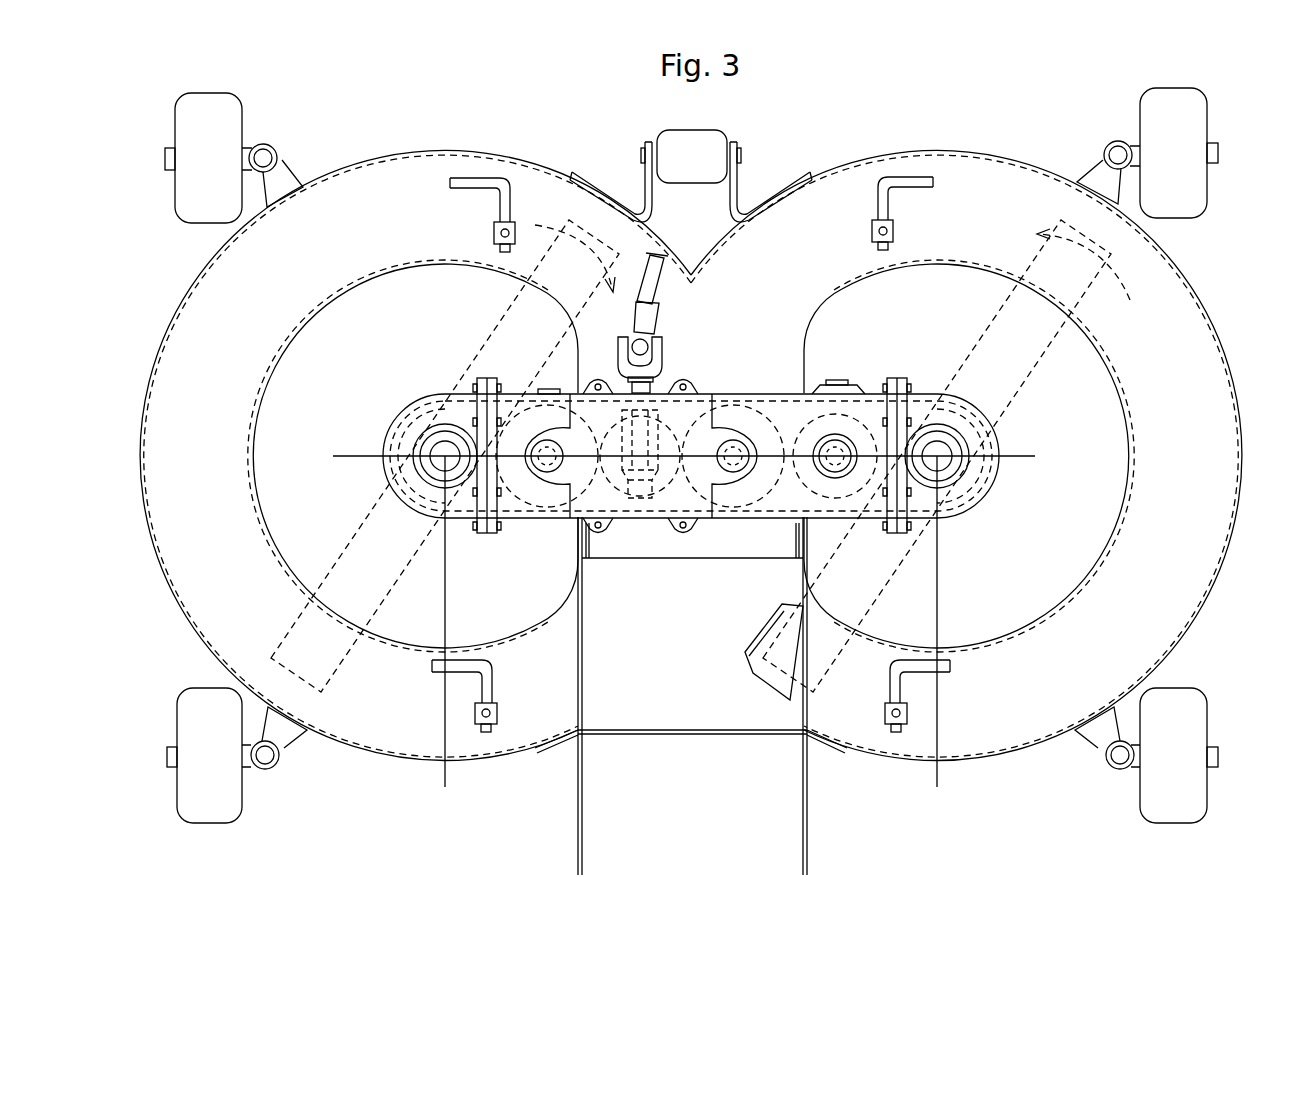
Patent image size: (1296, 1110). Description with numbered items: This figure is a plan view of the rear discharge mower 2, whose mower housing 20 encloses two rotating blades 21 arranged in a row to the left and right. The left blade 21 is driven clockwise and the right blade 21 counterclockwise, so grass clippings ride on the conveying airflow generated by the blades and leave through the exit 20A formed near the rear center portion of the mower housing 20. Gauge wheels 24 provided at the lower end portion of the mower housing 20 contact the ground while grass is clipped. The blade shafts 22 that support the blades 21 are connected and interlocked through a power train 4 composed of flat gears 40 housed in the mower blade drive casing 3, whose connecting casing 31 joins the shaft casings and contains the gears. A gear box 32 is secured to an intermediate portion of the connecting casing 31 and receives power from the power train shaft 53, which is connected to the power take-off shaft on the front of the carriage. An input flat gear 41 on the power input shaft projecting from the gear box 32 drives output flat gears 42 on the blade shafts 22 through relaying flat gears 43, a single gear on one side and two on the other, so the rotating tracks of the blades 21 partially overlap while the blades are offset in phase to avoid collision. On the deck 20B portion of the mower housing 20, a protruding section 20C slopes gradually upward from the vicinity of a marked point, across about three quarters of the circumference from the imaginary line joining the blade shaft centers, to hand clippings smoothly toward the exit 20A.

The mower 2 is at (1212, 300).
The mower blade drive casing 3 is at (732, 393).
The power train 4 is at (866, 372).
The mower housing 20 is at (945, 150).
The exit 20A is at (718, 702).
The deck 20B is at (202, 572).
The protruding section 20C is at (697, 558).
The rotating blade 21 is at (355, 547).
The blade shaft 22 is at (405, 413).
The gauge wheel 24 is at (195, 123).
The connecting casing 31 is at (772, 518).
The gear box 32 is at (668, 518).
The flat gear 40 is at (695, 468).
The input flat gear 41 is at (614, 520).
The output flat gear 42 is at (448, 395).
The relaying flat gear 43 is at (762, 400).
The power train shaft 53 is at (660, 362).